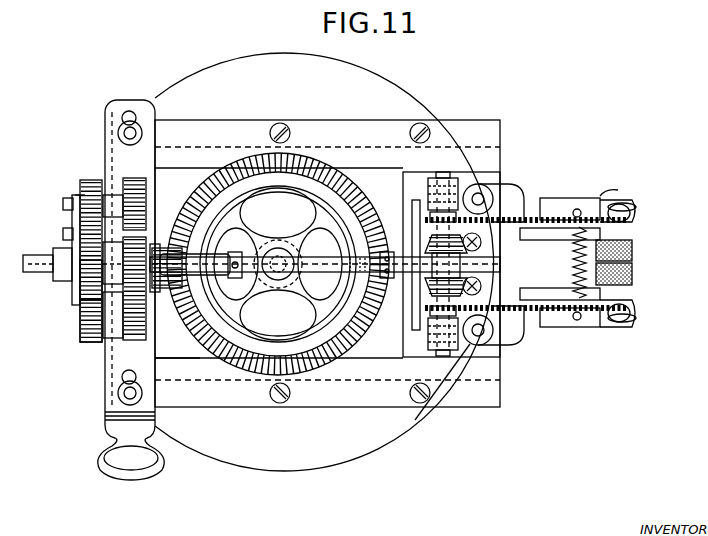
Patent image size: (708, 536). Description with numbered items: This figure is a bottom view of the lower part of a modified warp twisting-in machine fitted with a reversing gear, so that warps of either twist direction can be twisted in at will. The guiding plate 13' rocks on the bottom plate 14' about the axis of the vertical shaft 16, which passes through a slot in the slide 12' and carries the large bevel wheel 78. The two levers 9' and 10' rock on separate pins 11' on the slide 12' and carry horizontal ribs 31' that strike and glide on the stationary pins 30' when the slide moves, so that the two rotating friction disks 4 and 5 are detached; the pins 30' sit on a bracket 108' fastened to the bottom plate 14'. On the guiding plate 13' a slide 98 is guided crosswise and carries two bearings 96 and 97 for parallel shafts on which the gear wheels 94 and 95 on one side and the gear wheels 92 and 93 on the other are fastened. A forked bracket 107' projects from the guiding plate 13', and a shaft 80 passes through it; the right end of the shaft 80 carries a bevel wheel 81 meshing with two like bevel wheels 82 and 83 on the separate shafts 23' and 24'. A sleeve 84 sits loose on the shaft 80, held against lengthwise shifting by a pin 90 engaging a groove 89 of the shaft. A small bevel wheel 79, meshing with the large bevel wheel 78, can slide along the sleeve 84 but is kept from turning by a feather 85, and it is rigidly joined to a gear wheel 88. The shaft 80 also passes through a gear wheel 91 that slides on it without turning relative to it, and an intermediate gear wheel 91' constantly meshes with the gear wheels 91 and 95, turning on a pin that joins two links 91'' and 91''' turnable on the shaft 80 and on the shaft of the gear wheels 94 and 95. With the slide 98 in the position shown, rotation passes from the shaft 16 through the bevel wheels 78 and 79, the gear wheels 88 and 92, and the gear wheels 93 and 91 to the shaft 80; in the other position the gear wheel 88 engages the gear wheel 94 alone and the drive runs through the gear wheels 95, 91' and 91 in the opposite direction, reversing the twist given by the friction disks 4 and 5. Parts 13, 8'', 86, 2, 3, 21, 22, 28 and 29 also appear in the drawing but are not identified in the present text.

The bottom plate 14' is at (324, 259).
The frame 13 is at (327, 263).
The guiding plate 13' is at (177, 352).
The slide 98 is at (108, 415).
The gear wheel 95 is at (90, 180).
The gear wheel 93 is at (92, 342).
The gear wheel 88 is at (84, 300).
The gear wheel 94 is at (136, 178).
The bearing 97 is at (112, 195).
The gear wheel 92 is at (136, 340).
The bearing 96 is at (116, 338).
The forked bracket 107' is at (47, 277).
The gear wheel 91 is at (69, 254).
The intermediate gear wheel 91' is at (61, 189).
The link 91'' is at (56, 221).
The link 91''' is at (77, 160).
The shaft sleeve 8'' is at (325, 239).
The small bevel wheel 79 is at (166, 288).
The collar 86 is at (162, 292).
The feather 85 is at (232, 256).
The shaft 80 is at (342, 272).
The large bevel wheel 78 is at (310, 184).
The groove 89 is at (260, 288).
The sleeve 84 is at (230, 278).
The pin 90 is at (250, 262).
The vertical shaft 16 is at (280, 280).
The bevel wheel 81 is at (462, 264).
The bevel wheel 83 is at (425, 245).
The bevel wheel 82 is at (425, 290).
The shaft 24' is at (439, 188).
The shaft 23' is at (439, 340).
The bar 22 is at (430, 225).
The pin 11' is at (477, 266).
The slide 12' is at (501, 234).
The bracket 108' is at (479, 371).
The chain 28 is at (540, 218).
The stationary pin 30' is at (556, 268).
The lever 10' is at (570, 196).
The lever 9' is at (570, 334).
The horizontal rib 31' is at (566, 262).
The pin 29 is at (602, 198).
The clamp 3 is at (622, 200).
The clamp 2 is at (620, 328).
The screw 21 is at (630, 210).
The rotating friction disk 5 is at (632, 250).
The rotating friction disk 4 is at (632, 274).